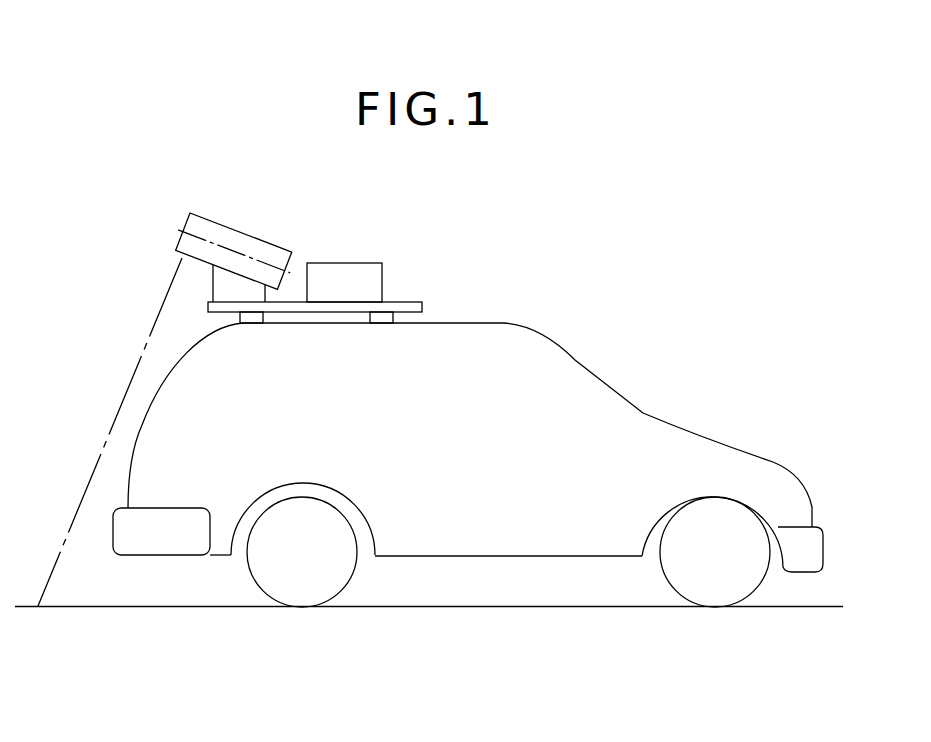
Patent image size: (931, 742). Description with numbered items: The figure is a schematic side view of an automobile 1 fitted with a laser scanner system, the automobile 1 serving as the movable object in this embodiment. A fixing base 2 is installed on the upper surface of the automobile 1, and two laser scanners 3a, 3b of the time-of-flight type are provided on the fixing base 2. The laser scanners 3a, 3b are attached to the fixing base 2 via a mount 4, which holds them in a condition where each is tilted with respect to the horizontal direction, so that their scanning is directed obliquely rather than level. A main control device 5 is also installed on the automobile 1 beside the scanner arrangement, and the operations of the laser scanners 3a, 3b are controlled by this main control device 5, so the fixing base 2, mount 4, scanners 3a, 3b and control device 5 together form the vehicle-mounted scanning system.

The automobile 1 is at (603, 385).
The fixing base 2 is at (413, 302).
The laser scanner 3a is at (272, 248).
The laser scanner 3b is at (293, 258).
The mount 4 is at (213, 284).
The main control device 5 is at (382, 280).